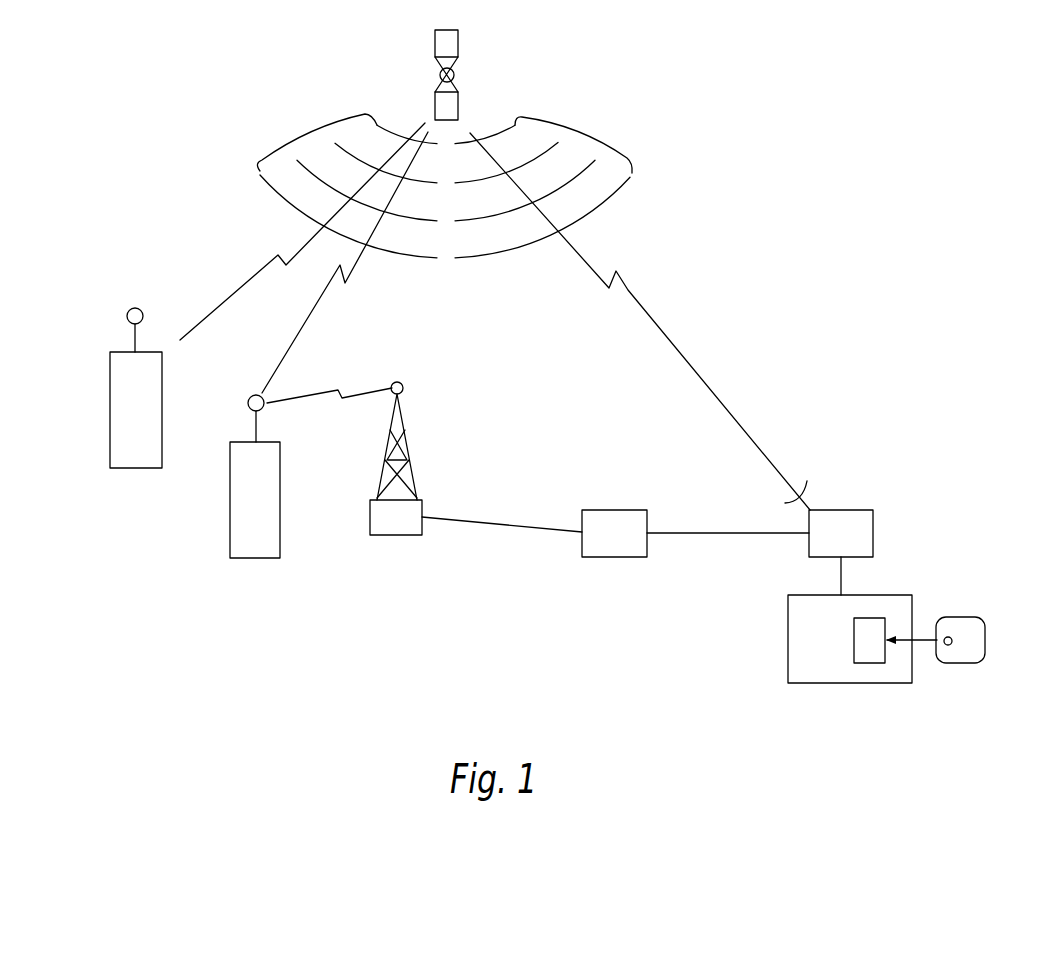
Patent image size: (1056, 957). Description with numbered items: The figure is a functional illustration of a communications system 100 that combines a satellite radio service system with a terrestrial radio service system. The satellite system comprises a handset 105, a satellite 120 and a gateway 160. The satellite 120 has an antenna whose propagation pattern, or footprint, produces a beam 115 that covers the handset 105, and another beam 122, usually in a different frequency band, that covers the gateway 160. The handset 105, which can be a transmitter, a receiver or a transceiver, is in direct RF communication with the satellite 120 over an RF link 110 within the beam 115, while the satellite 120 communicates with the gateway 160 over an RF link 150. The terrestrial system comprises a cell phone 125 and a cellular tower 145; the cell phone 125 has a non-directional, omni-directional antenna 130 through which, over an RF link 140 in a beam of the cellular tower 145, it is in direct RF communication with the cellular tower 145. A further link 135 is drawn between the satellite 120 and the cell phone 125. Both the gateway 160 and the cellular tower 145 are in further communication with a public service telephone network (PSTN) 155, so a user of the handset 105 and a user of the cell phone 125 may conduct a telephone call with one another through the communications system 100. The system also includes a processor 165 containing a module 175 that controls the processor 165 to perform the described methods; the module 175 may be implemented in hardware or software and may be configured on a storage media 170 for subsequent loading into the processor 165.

The communications system 100 is at (658, 116).
The handset 105 is at (122, 457).
The RF link 110 is at (233, 285).
The beam 115 is at (322, 133).
The satellite 120 is at (452, 79).
The beam 122 is at (575, 132).
The cell phone 125 is at (250, 547).
The omni-directional antenna 130 is at (250, 406).
The satellite link 135 is at (347, 267).
The RF link 140 is at (307, 394).
The cellular tower 145 is at (395, 528).
The RF link 150 is at (628, 292).
The public service telephone network (PSTN) 155 is at (612, 557).
The gateway 160 is at (854, 510).
The processor 165 is at (892, 602).
The storage media 170 is at (980, 627).
The module 175 is at (870, 655).